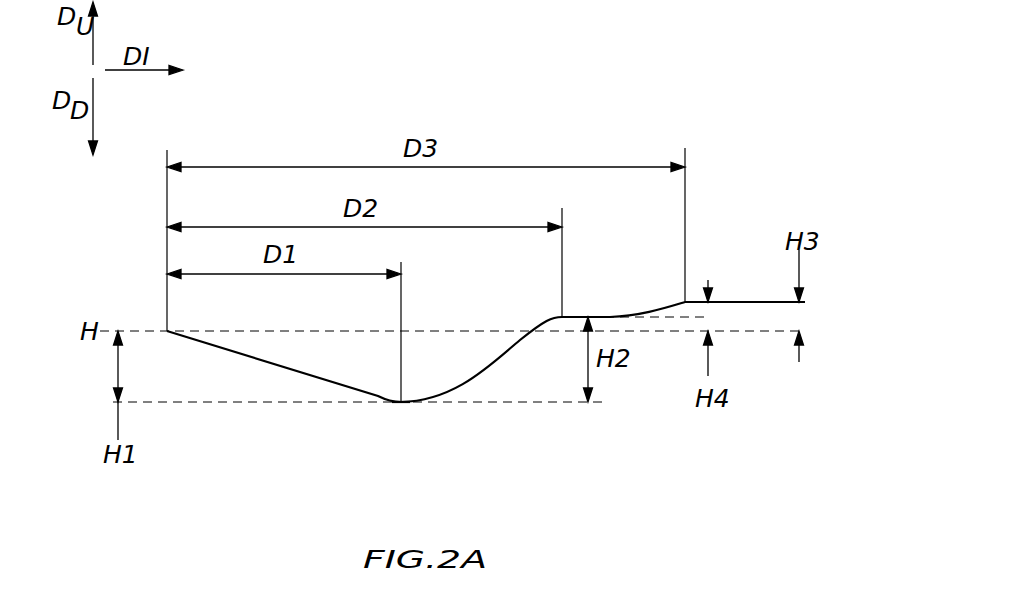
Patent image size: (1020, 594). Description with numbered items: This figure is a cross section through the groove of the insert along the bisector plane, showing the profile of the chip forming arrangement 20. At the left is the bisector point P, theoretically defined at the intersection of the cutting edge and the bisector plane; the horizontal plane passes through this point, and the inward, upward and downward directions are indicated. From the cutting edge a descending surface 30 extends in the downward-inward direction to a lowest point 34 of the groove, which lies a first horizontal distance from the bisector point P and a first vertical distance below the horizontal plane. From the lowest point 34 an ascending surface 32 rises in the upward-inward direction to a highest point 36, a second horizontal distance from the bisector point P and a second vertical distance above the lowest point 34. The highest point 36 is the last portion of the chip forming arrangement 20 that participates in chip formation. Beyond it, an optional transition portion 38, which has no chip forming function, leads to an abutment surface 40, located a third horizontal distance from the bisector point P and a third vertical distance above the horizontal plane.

The chip forming arrangement 20 is at (486, 274).
The descending surface 30 is at (268, 365).
The ascending surface 32 is at (511, 361).
The lowest point 34 is at (403, 406).
The highest point 36 is at (559, 317).
The transition portion 38 is at (612, 313).
The abutment surface 40 is at (753, 301).
The bisector point P is at (167, 336).